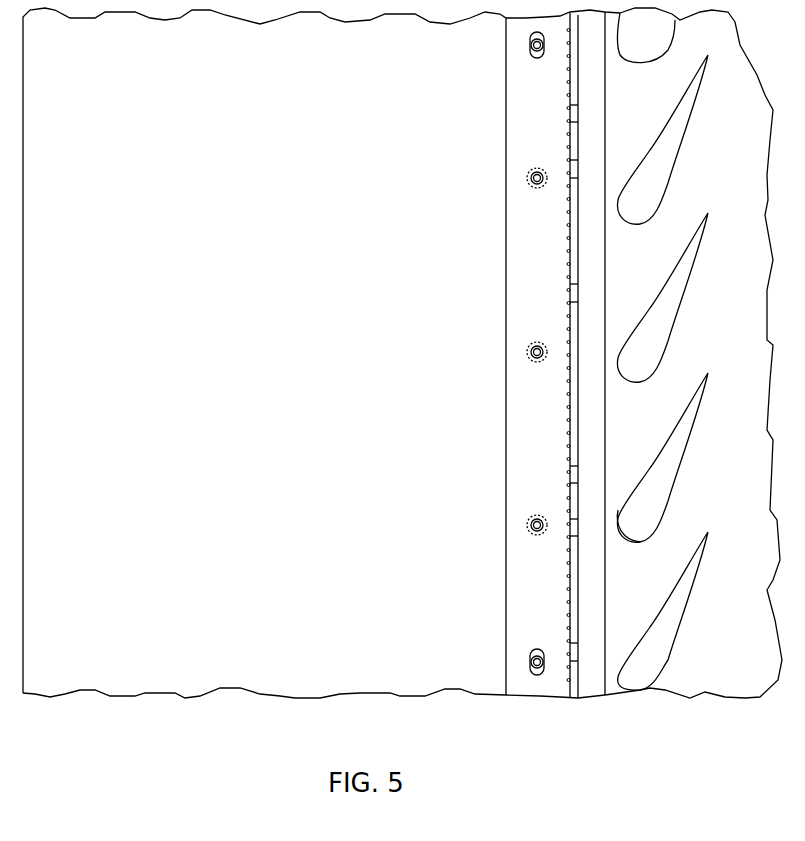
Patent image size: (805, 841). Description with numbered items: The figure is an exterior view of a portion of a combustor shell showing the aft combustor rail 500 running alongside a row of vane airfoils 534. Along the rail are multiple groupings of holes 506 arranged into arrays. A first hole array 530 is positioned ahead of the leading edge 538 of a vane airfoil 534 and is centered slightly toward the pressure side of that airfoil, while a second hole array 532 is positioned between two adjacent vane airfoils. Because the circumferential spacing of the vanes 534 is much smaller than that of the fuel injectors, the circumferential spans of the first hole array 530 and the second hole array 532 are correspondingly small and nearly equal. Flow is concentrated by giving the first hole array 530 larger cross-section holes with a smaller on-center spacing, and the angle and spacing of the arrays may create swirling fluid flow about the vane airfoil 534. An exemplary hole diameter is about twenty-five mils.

The aft combustor rail 500 is at (402, 392).
The holes 506 is at (565, 85).
The first hole array 530 is at (566, 466).
The second hole array 532 is at (566, 378).
The vane airfoil 534 is at (672, 478).
The leading edge 538 is at (637, 553).